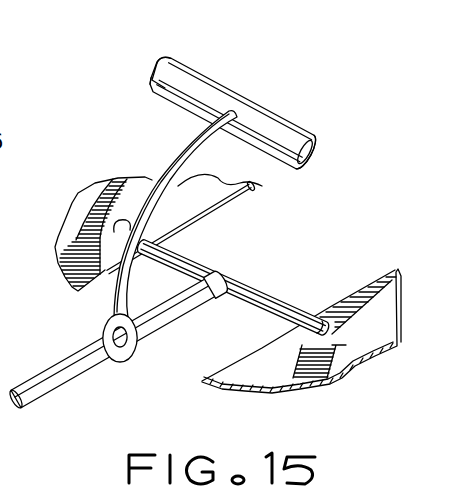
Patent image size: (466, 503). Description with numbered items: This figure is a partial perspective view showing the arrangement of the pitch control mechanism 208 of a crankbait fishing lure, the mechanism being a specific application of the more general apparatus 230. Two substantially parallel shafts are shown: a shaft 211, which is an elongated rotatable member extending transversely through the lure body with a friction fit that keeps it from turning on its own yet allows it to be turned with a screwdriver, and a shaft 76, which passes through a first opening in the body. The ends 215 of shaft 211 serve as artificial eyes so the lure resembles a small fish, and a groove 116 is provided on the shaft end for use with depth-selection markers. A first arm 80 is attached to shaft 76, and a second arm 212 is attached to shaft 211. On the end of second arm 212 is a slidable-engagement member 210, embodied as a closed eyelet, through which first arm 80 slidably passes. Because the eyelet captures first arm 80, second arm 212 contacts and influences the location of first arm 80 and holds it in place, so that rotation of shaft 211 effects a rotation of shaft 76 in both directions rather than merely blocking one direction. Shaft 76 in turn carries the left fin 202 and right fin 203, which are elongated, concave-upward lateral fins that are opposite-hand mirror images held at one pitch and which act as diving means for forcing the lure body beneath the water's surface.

The pitch control mechanism 208 is at (244, 212).
The shaft 211 is at (284, 127).
The ends 215 is at (158, 54).
The groove 116 is at (320, 143).
The second arm 212 is at (194, 150).
The slidable-engagement member 210 is at (115, 364).
The first arm 80 is at (43, 379).
The shaft 76 is at (278, 300).
The left fin 202 is at (230, 209).
The right fin 203 is at (341, 378).
The apparatus 230 is at (240, 49).